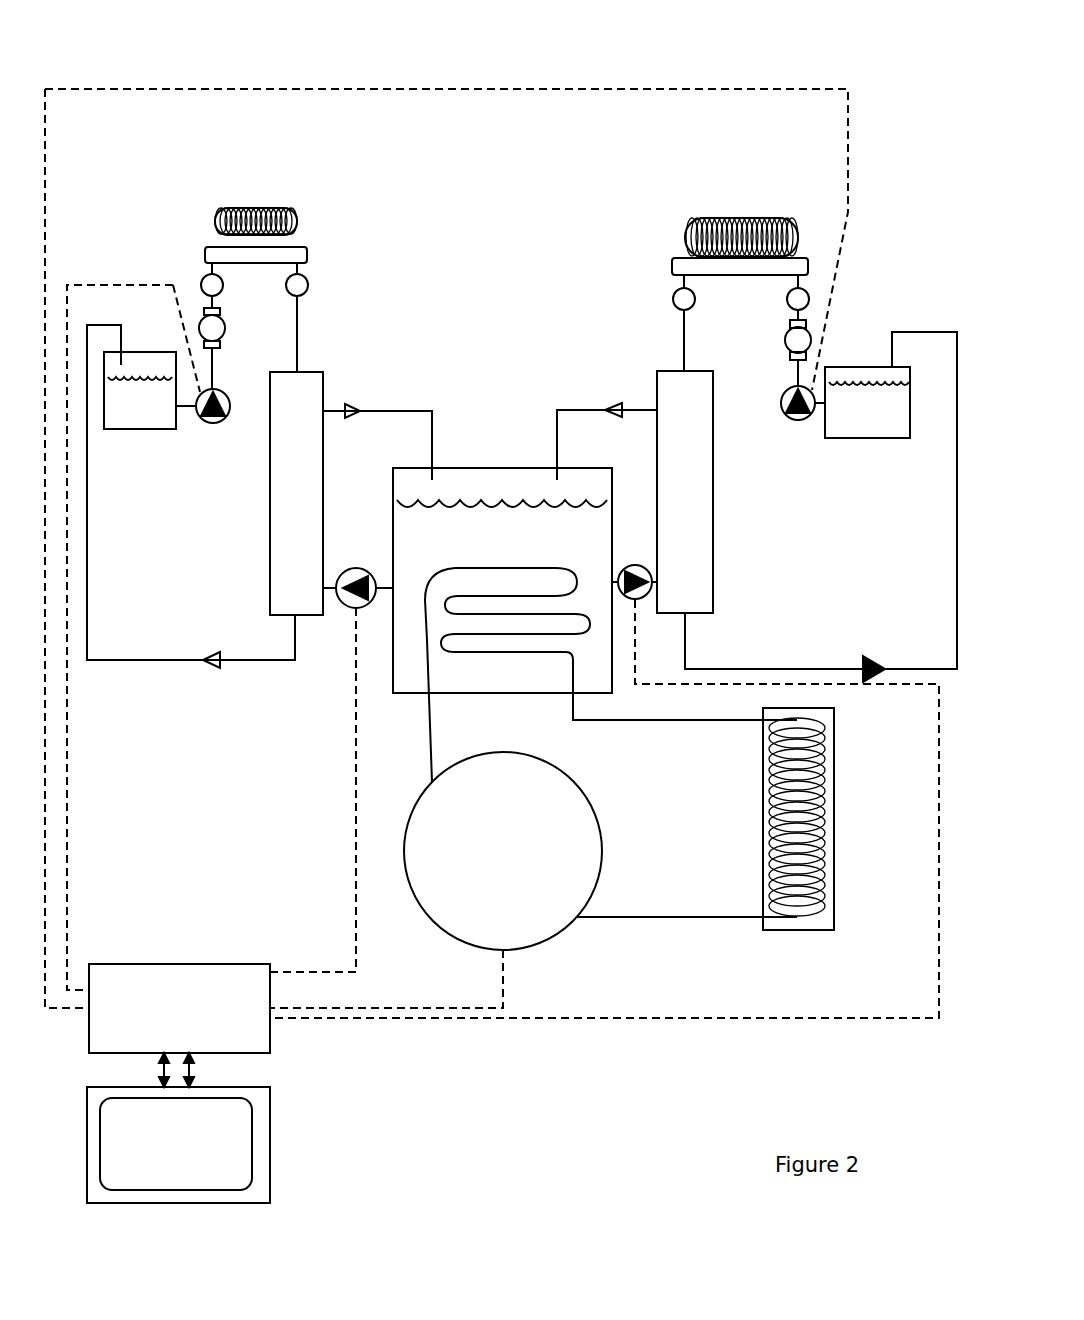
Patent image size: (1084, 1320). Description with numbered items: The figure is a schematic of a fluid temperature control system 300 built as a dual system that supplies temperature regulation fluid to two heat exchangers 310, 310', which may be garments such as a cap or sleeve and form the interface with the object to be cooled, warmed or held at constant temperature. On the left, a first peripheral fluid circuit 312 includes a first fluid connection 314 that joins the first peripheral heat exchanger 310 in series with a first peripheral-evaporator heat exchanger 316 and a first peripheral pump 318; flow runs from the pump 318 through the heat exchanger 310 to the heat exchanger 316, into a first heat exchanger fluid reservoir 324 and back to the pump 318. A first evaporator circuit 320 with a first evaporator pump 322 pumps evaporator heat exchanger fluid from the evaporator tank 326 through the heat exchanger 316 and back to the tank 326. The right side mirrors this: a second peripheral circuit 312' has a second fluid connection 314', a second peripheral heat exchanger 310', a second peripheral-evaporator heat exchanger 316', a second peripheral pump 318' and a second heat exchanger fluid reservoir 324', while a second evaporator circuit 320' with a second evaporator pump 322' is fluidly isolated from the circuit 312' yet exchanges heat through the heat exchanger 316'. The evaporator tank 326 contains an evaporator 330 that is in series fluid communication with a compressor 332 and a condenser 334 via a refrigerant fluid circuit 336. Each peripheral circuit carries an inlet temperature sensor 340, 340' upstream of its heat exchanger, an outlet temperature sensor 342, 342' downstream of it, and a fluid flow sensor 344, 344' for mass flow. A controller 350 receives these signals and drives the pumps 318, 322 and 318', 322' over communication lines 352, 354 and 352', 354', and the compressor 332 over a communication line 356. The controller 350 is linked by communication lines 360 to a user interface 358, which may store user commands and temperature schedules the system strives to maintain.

The fluid temperature control system 300 is at (755, 62).
The first peripheral heat exchanger 310 is at (256, 176).
The second peripheral heat exchanger 310' is at (741, 205).
The first peripheral fluid circuit 312 is at (340, 334).
The second peripheral fluid circuit 312' is at (636, 340).
The first fluid connection 314 is at (243, 211).
The second fluid connection 314' is at (728, 228).
The first peripheral-evaporator heat exchanger 316 is at (251, 493).
The second peripheral-evaporator heat exchanger 316' is at (728, 492).
The first peripheral pump 318 is at (204, 435).
The second peripheral pump 318' is at (794, 430).
The first evaporator circuit 320 is at (377, 418).
The second evaporator circuit 320' is at (607, 418).
The first evaporator pump 322 is at (358, 559).
The second evaporator pump 322' is at (636, 546).
The first heat exchanger fluid reservoir 324 is at (191, 496).
The second heat exchanger fluid reservoir 324' is at (821, 507).
The evaporator tank 326 is at (393, 693).
The evaporator 330 is at (500, 568).
The compressor 332 is at (422, 905).
The condenser 334 is at (834, 920).
The refrigerant fluid circuit 336 is at (680, 917).
The inlet temperature sensor 340 is at (176, 244).
The inlet temperature sensor 340' is at (805, 255).
The outlet temperature sensor 342 is at (341, 261).
The outlet temperature sensor 342' is at (640, 260).
The fluid flow sensor 344 is at (235, 342).
The fluid flow sensor 344' is at (765, 348).
The controller 350 is at (180, 964).
The communication line 352 is at (133, 603).
The communication line 352' is at (446, 517).
The communication line 354 is at (313, 790).
The communication line 354' is at (604, 809).
The communication line 356 is at (503, 975).
The user interface 358 is at (262, 1185).
The communication lines 360 is at (186, 1074).